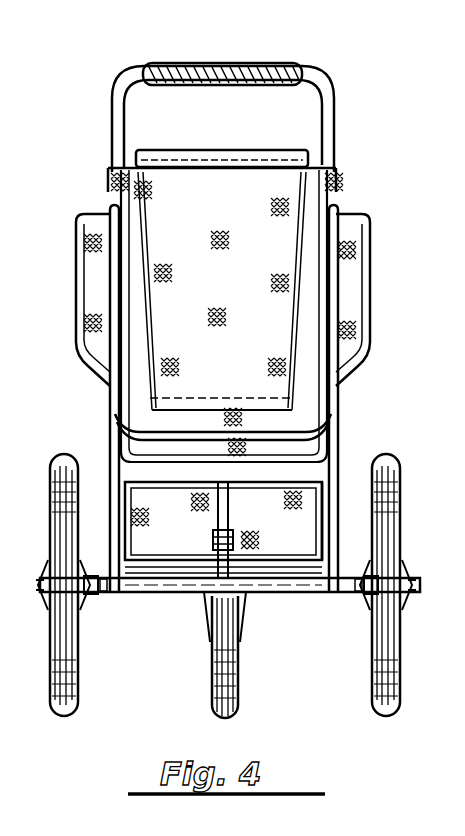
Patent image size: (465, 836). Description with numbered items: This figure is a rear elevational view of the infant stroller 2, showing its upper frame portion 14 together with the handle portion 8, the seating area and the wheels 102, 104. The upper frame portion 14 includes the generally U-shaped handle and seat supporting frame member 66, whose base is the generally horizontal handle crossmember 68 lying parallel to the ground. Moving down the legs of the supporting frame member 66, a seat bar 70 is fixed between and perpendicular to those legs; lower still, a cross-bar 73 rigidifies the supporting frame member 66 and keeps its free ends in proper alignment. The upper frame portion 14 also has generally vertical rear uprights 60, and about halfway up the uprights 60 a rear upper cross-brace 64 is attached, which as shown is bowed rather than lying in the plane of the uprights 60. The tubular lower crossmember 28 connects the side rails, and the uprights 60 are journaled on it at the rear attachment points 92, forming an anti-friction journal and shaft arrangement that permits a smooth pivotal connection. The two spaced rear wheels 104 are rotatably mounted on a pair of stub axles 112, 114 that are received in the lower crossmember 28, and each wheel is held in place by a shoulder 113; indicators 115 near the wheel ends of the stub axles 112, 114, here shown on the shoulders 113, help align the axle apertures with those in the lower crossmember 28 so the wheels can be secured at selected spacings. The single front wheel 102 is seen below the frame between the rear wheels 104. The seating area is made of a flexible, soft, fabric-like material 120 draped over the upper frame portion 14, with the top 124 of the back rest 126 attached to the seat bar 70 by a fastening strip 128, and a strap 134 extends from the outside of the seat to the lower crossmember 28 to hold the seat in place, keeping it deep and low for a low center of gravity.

The infant stroller 2 is at (56, 290).
The handle portion 8 is at (104, 72).
The upper frame portion 14 is at (341, 397).
The lower crossmember 28 is at (250, 594).
The rear uprights 60 is at (323, 497).
The rear upper cross-brace 64 is at (200, 437).
The handle and seat supporting frame member 66 is at (110, 136).
The handle crossmember 68 is at (314, 70).
The seat bar 70 is at (312, 156).
The cross-bar 73 is at (155, 556).
The rear attachment points 92 is at (314, 648).
The front wheel 102 is at (214, 716).
The rear wheels 104 is at (64, 718).
The stub axle 112 is at (90, 592).
The shoulder 113 is at (86, 598).
The stub axle 114 is at (360, 590).
The indicators 115 is at (85, 578).
The fabric-like material 120 is at (334, 172).
The top of the back rest 124 is at (244, 202).
The back rest 126 is at (244, 293).
The fastening strip 128 is at (177, 168).
The strap 134 is at (230, 507).